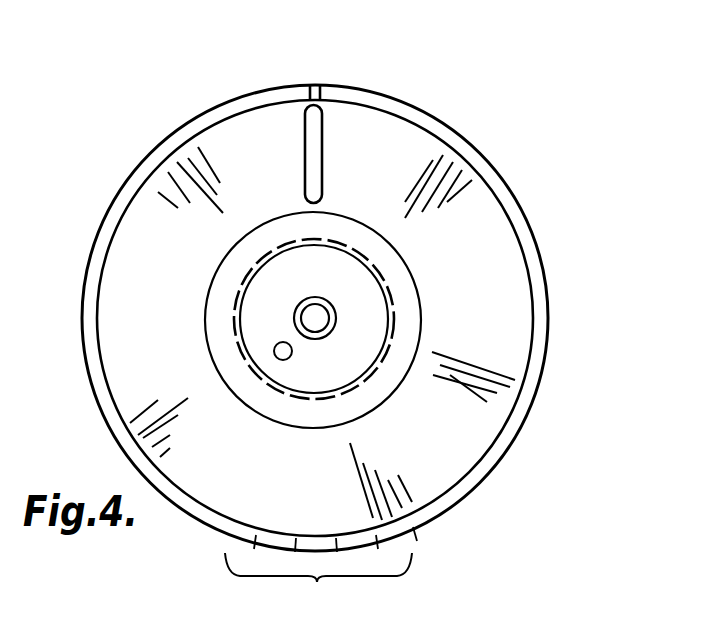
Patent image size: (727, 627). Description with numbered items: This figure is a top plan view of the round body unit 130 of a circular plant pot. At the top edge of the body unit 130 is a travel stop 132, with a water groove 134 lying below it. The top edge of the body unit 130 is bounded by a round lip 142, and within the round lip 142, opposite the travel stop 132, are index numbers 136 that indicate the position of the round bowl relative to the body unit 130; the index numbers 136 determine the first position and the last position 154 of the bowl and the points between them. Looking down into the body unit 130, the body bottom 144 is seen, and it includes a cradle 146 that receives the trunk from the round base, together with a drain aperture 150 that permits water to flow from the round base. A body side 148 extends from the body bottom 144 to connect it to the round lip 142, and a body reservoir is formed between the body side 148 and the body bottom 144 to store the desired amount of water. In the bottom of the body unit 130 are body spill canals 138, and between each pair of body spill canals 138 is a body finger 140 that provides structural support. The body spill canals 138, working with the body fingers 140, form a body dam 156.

The body unit 130 is at (492, 148).
The travel stop 132 is at (320, 88).
The water groove 134 is at (315, 162).
The index numbers 136 is at (392, 530).
The body spill canals 138 is at (238, 340).
The body finger 140 is at (248, 362).
The round lip 142 is at (468, 478).
The body bottom 144 is at (363, 335).
The cradle 146 is at (297, 303).
The body side 148 is at (463, 400).
The drain aperture 150 is at (289, 358).
The last position 154 is at (318, 583).
The body dam 156 is at (225, 357).